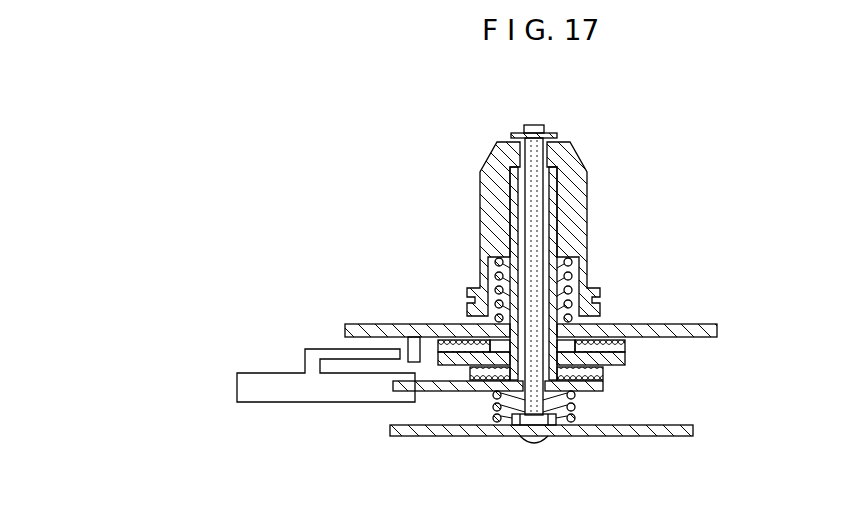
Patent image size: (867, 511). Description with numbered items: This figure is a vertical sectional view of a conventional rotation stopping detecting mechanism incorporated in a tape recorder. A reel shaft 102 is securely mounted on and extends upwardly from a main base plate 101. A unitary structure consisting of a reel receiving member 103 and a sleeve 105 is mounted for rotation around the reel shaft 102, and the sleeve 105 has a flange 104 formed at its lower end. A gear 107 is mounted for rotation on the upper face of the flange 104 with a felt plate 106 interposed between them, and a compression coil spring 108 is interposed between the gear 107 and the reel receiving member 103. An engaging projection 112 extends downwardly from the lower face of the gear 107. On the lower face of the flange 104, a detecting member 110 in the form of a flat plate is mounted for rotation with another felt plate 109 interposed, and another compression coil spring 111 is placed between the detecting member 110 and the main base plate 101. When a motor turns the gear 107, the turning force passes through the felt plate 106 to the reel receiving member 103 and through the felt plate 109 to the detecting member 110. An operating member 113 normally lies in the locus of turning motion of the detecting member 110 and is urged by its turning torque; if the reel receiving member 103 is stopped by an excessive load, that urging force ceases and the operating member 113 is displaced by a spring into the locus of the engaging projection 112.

The main base plate 101 is at (663, 436).
The reel shaft 102 is at (538, 123).
The reel receiving member 103 is at (578, 156).
The flange 104 is at (625, 362).
The sleeve 105 is at (556, 218).
The felt plate 106 is at (626, 343).
The gear 107 is at (718, 324).
The compression coil spring 108 is at (573, 263).
The felt plate 109 is at (607, 373).
The detecting member 110 is at (472, 393).
The compression coil spring 111 is at (580, 405).
The engaging projection 112 is at (403, 342).
The operating member 113 is at (328, 405).